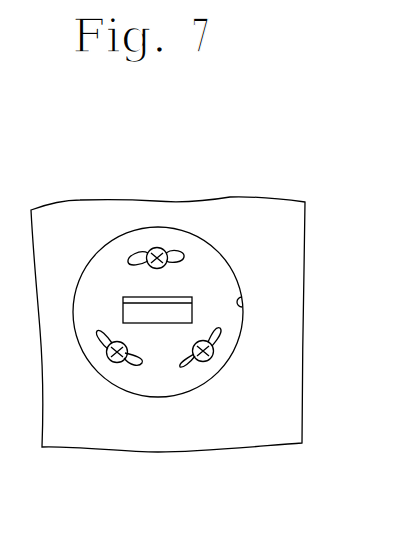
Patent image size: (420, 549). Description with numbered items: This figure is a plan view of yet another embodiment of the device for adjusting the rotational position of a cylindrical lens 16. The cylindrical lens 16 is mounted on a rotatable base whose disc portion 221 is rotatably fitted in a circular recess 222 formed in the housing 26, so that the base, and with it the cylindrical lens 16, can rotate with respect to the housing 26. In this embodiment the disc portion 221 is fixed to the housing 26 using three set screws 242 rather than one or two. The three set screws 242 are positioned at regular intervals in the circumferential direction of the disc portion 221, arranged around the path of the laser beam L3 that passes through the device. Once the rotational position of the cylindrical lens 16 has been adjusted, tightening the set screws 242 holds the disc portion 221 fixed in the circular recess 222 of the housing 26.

The housing 26 is at (282, 250).
The disc portion 221 is at (207, 262).
The laser beam L3 is at (157, 480).
The circular recess 222 is at (242, 312).
The cylindrical lens 16 is at (173, 318).
The set screws 242 is at (143, 250).